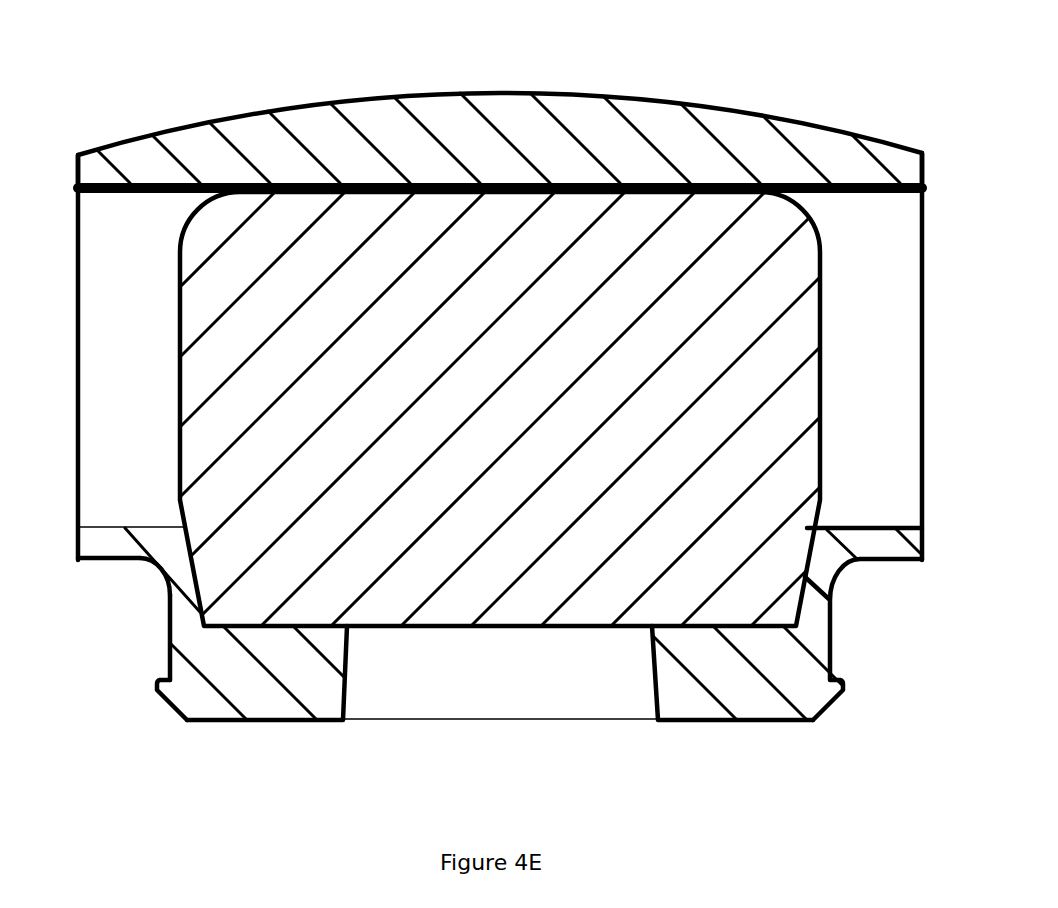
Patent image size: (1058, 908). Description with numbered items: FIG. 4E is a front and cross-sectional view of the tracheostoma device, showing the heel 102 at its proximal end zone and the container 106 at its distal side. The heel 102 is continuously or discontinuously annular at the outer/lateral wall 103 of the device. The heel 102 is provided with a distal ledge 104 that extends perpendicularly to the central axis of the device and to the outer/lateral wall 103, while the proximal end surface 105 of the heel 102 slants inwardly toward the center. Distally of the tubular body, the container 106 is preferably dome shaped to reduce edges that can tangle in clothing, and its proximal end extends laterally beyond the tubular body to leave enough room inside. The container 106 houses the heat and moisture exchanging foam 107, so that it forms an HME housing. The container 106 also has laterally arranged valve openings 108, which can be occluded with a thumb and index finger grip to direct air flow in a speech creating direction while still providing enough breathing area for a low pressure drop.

The heel 102 is at (862, 633).
The outer/lateral wall 103 is at (170, 612).
The distal ledge 104 is at (167, 678).
The proximal end surface 105 is at (168, 706).
The container 106 is at (848, 220).
The heat and moisture exchanging foam 107 is at (307, 251).
The valve openings 108 is at (77, 225).